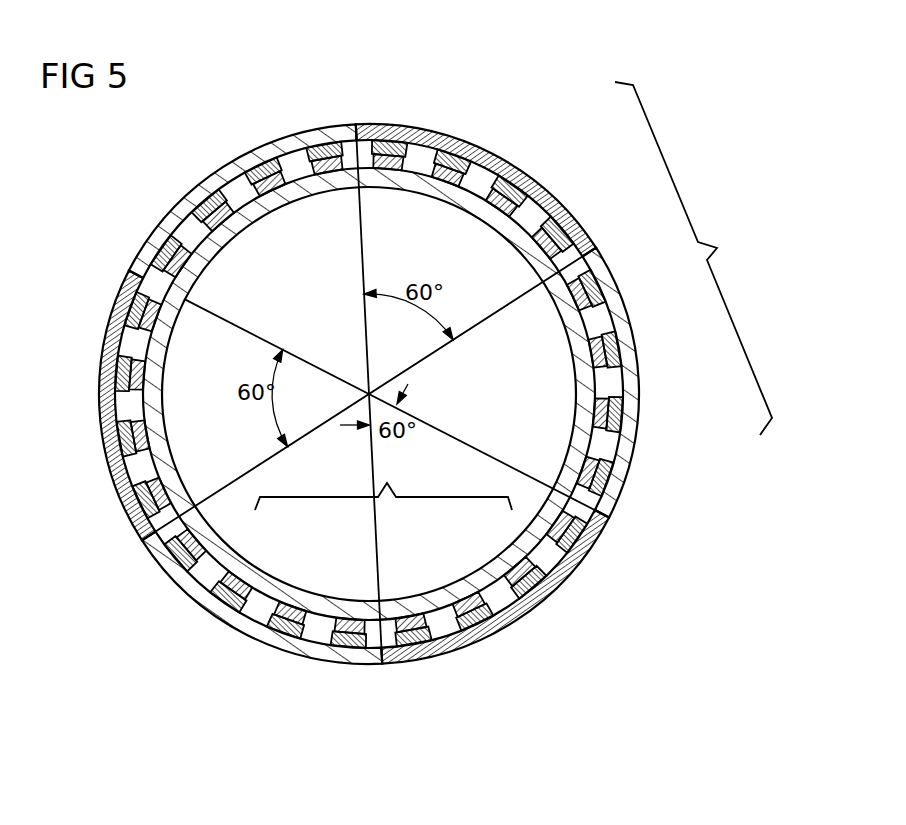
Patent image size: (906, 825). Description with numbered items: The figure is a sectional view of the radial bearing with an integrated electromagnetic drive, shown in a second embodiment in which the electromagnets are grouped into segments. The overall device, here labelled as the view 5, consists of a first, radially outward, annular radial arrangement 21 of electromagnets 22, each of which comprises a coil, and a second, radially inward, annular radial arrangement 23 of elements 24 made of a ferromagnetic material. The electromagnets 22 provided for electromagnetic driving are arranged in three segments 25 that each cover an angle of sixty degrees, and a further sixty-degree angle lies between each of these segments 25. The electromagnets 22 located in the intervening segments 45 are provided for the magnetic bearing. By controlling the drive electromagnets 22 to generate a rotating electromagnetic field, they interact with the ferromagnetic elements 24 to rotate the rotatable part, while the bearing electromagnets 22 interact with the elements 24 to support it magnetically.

The stator / rotor bore center 5 is at (372, 391).
The radially outward annular radial arrangement 21 is at (693, 258).
The electromagnet 22 is at (520, 166).
The radially inward annular radial arrangement 23 is at (383, 481).
The element made of ferromagnetic material 24 is at (235, 572).
The segment 25 is at (425, 128).
The intervening segment 45 is at (290, 140).